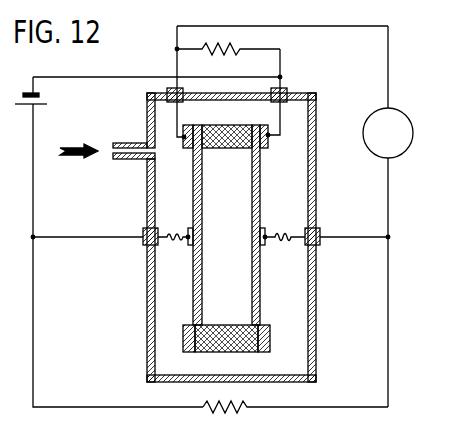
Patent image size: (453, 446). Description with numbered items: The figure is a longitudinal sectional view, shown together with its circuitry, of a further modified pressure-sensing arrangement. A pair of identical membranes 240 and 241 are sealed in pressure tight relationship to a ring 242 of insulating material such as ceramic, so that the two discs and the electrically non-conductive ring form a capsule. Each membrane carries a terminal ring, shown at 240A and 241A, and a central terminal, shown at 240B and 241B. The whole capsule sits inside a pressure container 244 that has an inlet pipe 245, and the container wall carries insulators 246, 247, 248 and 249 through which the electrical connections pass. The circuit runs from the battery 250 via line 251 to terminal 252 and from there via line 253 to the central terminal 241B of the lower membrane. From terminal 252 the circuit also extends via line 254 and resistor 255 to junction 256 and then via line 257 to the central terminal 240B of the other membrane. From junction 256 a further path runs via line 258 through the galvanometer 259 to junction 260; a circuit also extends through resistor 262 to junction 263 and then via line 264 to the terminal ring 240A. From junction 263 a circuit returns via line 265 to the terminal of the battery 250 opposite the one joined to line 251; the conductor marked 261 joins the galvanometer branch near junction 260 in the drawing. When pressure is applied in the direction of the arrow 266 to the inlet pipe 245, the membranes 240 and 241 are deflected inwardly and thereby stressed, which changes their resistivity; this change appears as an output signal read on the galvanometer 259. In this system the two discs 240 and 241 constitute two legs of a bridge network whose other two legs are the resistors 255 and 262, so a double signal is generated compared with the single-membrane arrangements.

The membrane 240 is at (260, 212).
The terminal ring 240A is at (268, 146).
The central terminal 240B is at (266, 246).
The membrane 241 is at (193, 218).
The terminal ring 241A is at (193, 152).
The central terminal 241B is at (190, 246).
The ring of insulating material 242 is at (223, 130).
The pressure container 244 is at (316, 113).
The inlet pipe 245 is at (143, 159).
The insulator 246 is at (320, 232).
The insulator 247 is at (143, 243).
The insulator 248 is at (287, 92).
The insulator 249 is at (166, 87).
The battery 250 is at (40, 100).
The line 251 is at (34, 195).
The terminal 252 is at (34, 237).
The line 253 is at (124, 228).
The line 254 is at (34, 332).
The resistor 255 is at (245, 405).
The junction 256 is at (389, 237).
The line 257 is at (360, 238).
The line 258 is at (390, 180).
The galvanometer 259 is at (414, 134).
The junction 260 is at (177, 48).
The conductor 261 is at (176, 64).
The resistor 262 is at (222, 53).
The junction 263 is at (281, 76).
The line 264 is at (283, 134).
The line 265 is at (115, 76).
The flow arrow 266 is at (80, 147).